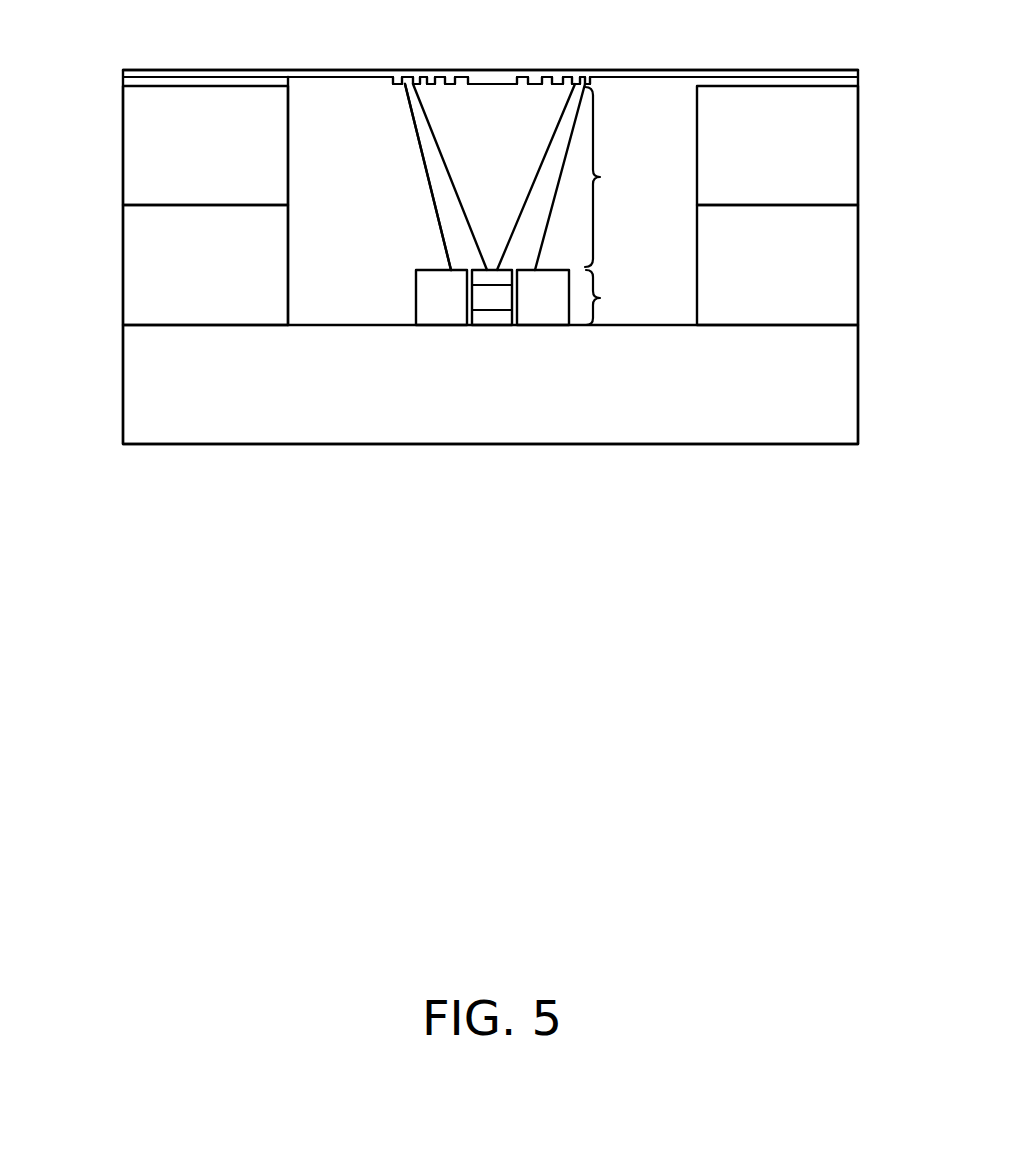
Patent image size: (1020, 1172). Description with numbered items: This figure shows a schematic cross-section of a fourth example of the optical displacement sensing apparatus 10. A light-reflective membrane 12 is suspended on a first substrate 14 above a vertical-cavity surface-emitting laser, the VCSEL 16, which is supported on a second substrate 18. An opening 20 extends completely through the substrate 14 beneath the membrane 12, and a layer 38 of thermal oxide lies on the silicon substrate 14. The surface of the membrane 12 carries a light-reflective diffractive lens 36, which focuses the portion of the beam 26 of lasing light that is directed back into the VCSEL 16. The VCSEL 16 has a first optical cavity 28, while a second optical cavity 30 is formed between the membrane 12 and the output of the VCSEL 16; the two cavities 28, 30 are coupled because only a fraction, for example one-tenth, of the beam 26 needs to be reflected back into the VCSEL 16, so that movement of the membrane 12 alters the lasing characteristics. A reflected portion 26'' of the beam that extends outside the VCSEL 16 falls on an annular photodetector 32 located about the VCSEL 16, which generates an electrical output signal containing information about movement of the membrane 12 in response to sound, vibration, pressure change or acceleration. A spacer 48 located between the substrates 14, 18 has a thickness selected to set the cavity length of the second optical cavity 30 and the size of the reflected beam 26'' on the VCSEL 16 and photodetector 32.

The optical displacement sensing apparatus 10 is at (818, 473).
The membrane 12 is at (349, 68).
The first substrate 14 is at (490, 145).
The vertical-cavity surface-emitting laser (VCSEL) 16 is at (492, 327).
The second substrate 18 is at (490, 384).
The opening 20 is at (288, 156).
The beam of lasing light 26 is at (495, 177).
The reflected portion of the beam 26'' is at (409, 177).
The first optical cavity 28 is at (612, 297).
The second optical cavity 30 is at (611, 177).
The annular photodetector 32 is at (492, 297).
The light-reflective diffractive lens 36 is at (493, 92).
The layer of thermal oxide 38 is at (123, 80).
The spacer 48 is at (490, 265).